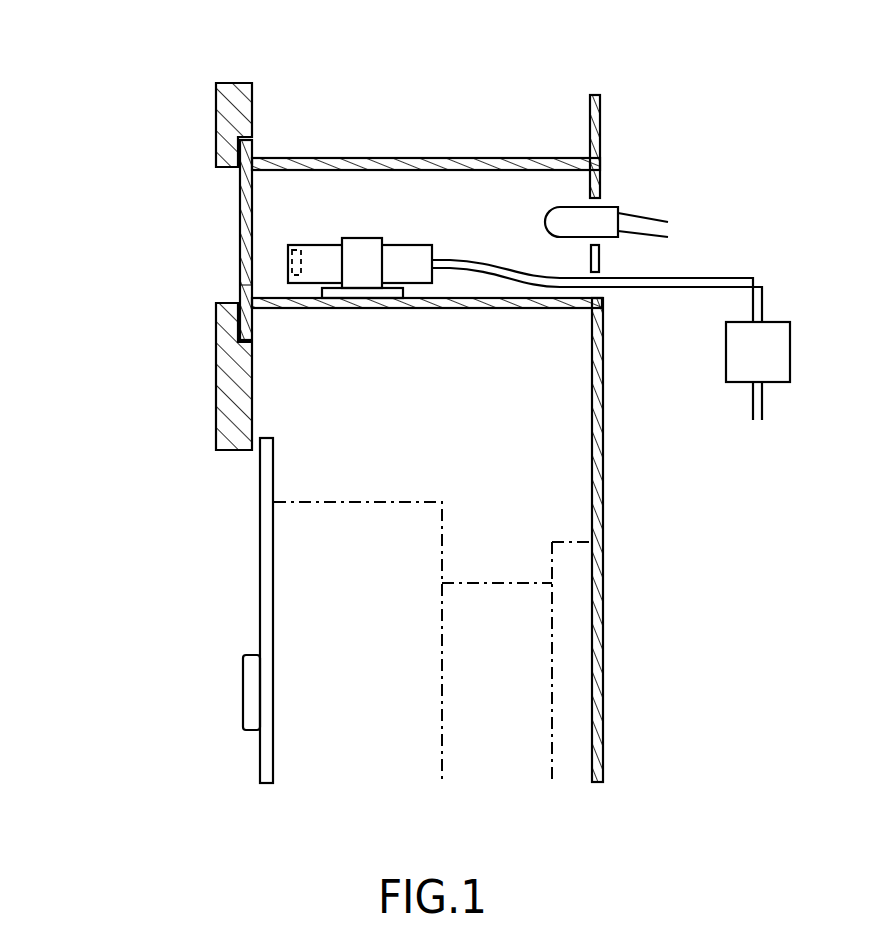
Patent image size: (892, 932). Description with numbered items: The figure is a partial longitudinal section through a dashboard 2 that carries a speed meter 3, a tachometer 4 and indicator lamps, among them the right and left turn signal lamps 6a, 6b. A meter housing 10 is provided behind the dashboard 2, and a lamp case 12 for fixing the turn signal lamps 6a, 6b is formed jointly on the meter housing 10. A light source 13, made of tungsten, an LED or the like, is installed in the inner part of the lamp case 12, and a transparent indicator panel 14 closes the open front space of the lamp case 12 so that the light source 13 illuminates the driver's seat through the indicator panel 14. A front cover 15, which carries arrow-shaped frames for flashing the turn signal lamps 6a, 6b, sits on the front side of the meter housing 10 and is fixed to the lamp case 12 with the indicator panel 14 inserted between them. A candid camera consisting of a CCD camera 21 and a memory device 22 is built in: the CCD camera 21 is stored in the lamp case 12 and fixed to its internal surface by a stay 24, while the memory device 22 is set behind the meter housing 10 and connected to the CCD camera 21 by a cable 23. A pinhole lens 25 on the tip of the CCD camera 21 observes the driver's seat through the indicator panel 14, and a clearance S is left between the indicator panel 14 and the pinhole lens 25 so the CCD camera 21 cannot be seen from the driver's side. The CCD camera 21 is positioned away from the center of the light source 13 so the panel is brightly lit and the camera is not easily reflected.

The dashboard 2 is at (240, 513).
The speed meter 3 is at (166, 725).
The tachometer 4 is at (260, 763).
The turn signal lamp 6a is at (141, 232).
The turn signal lamp 6b is at (222, 212).
The meter housing 10 is at (603, 503).
The lamp case 12 is at (436, 158).
The light source 13 is at (555, 213).
The indicator panel 14 is at (240, 285).
The front cover 15 is at (215, 388).
The CCD camera 21 is at (420, 272).
The memory device 22 is at (783, 367).
The cable 23 is at (640, 285).
The stay 24 is at (365, 280).
The pinhole lens 25 is at (290, 265).
The clearance S is at (275, 275).